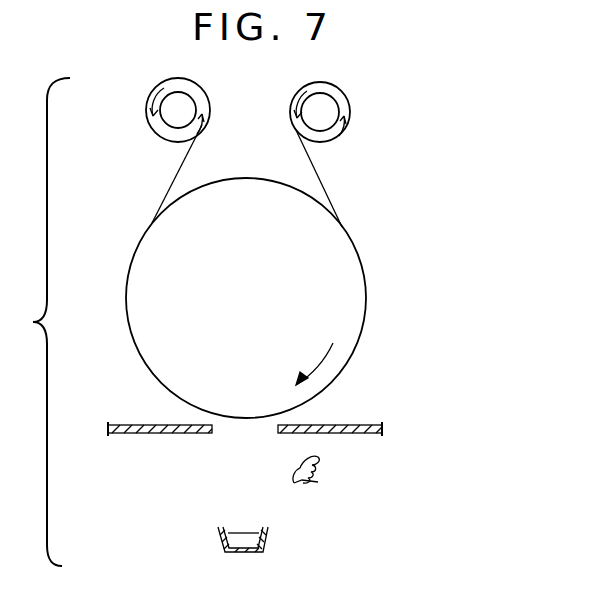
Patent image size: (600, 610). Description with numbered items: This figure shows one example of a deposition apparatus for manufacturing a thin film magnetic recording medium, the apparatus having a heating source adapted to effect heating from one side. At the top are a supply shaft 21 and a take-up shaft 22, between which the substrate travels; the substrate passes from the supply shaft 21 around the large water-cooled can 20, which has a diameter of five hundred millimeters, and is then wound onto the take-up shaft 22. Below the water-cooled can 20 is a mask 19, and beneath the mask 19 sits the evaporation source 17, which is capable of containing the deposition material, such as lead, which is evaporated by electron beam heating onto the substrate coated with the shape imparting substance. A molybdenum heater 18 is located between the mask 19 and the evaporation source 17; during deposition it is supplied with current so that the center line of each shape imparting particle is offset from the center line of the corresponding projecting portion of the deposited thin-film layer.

The evaporation source 17 is at (258, 538).
The molybdenum heater 18 is at (318, 482).
The mask 19 is at (305, 424).
The water-cooled can 20 is at (345, 273).
The supply shaft 21 is at (327, 105).
The take-up shaft 22 is at (189, 104).